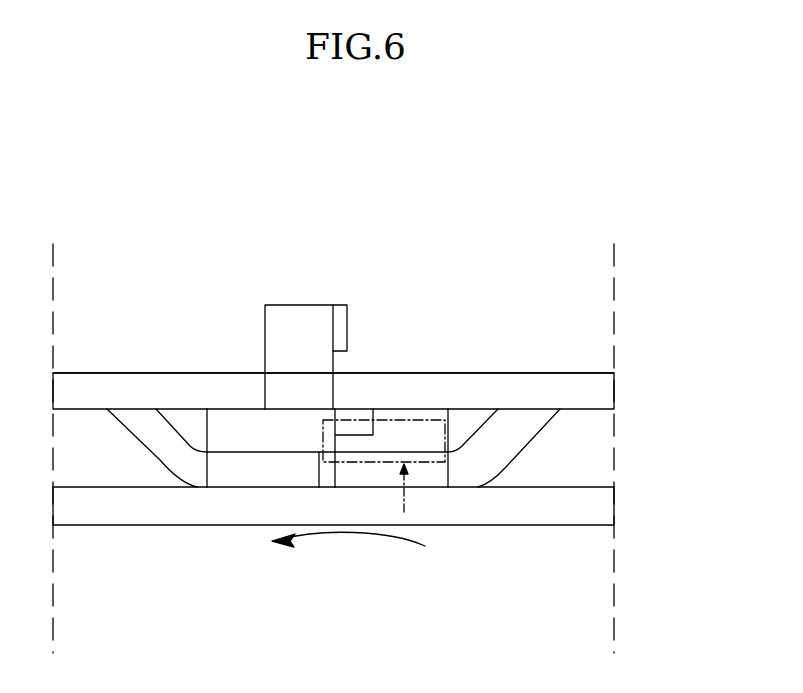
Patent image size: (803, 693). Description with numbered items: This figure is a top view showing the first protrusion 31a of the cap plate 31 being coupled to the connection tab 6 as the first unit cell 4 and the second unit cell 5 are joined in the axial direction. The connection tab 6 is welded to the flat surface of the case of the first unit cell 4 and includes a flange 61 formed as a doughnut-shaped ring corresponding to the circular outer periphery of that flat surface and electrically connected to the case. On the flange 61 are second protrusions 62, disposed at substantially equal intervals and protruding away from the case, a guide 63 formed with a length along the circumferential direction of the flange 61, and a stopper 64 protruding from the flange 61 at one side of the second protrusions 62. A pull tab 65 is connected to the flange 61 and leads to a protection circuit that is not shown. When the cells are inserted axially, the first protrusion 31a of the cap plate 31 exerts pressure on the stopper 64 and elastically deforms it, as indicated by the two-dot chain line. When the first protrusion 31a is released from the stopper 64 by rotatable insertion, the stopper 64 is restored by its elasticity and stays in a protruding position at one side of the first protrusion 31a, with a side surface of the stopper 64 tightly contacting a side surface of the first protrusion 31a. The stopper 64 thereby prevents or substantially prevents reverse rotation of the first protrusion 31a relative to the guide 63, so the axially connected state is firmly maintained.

The first unit cell 4 is at (583, 343).
The second unit cell 5 is at (583, 548).
The connection tab 6 is at (616, 392).
The cap plate 31 is at (616, 498).
The first protrusion 31a is at (323, 428).
The flange 61 is at (500, 386).
The second protrusion 62 is at (157, 445).
The guide 63 is at (230, 470).
The stopper 64 is at (363, 415).
The pull tab 65 is at (315, 317).